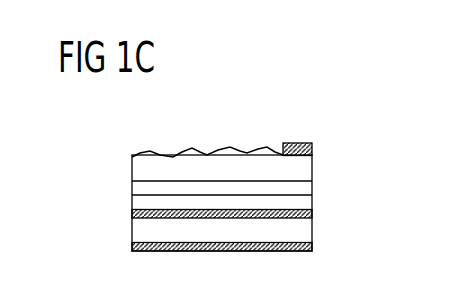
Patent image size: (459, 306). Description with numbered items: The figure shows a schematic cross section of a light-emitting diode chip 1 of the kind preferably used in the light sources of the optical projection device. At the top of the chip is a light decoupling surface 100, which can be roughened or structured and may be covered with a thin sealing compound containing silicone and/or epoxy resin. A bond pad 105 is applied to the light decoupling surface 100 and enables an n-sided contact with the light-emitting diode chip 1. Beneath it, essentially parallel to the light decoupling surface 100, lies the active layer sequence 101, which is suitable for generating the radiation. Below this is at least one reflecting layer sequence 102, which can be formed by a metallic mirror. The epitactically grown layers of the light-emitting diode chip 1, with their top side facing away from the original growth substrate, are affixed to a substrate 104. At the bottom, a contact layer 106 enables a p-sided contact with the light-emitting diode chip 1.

The light-emitting diode chip 1 is at (117, 198).
The light decoupling surface 100 is at (212, 152).
The active layer sequence 101 is at (312, 185).
The reflecting layer sequence 102 is at (312, 213).
The substrate 104 is at (132, 232).
The bond pad 105 is at (312, 152).
The contact layer 106 is at (312, 247).